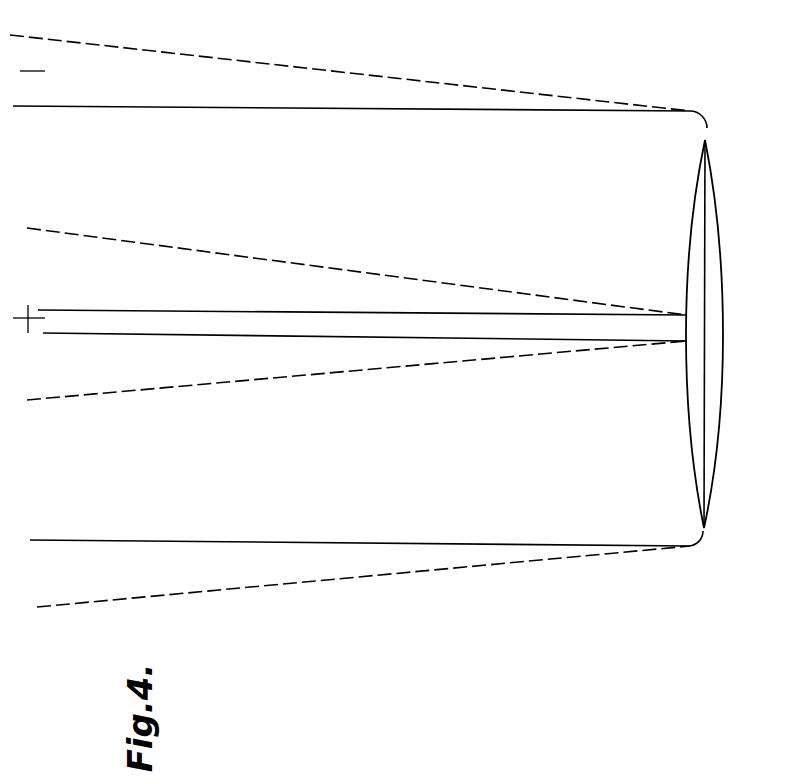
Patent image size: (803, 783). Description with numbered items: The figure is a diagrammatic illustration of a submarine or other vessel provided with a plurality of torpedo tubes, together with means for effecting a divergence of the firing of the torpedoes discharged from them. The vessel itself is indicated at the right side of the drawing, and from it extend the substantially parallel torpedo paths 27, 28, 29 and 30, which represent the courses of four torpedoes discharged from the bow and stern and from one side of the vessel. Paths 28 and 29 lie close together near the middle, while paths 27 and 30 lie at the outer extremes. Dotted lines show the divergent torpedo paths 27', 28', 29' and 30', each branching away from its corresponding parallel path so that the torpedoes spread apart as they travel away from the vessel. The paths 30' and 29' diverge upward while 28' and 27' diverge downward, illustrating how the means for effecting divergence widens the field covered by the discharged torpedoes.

The torpedo path 27 is at (366, 527).
The divergent torpedo path 27' is at (363, 581).
The torpedo path 28 is at (364, 350).
The divergent torpedo path 28' is at (356, 377).
The torpedo path 29 is at (362, 296).
The divergent torpedo path 29' is at (356, 270).
The torpedo path 30 is at (360, 122).
The divergent torpedo path 30' is at (350, 69).